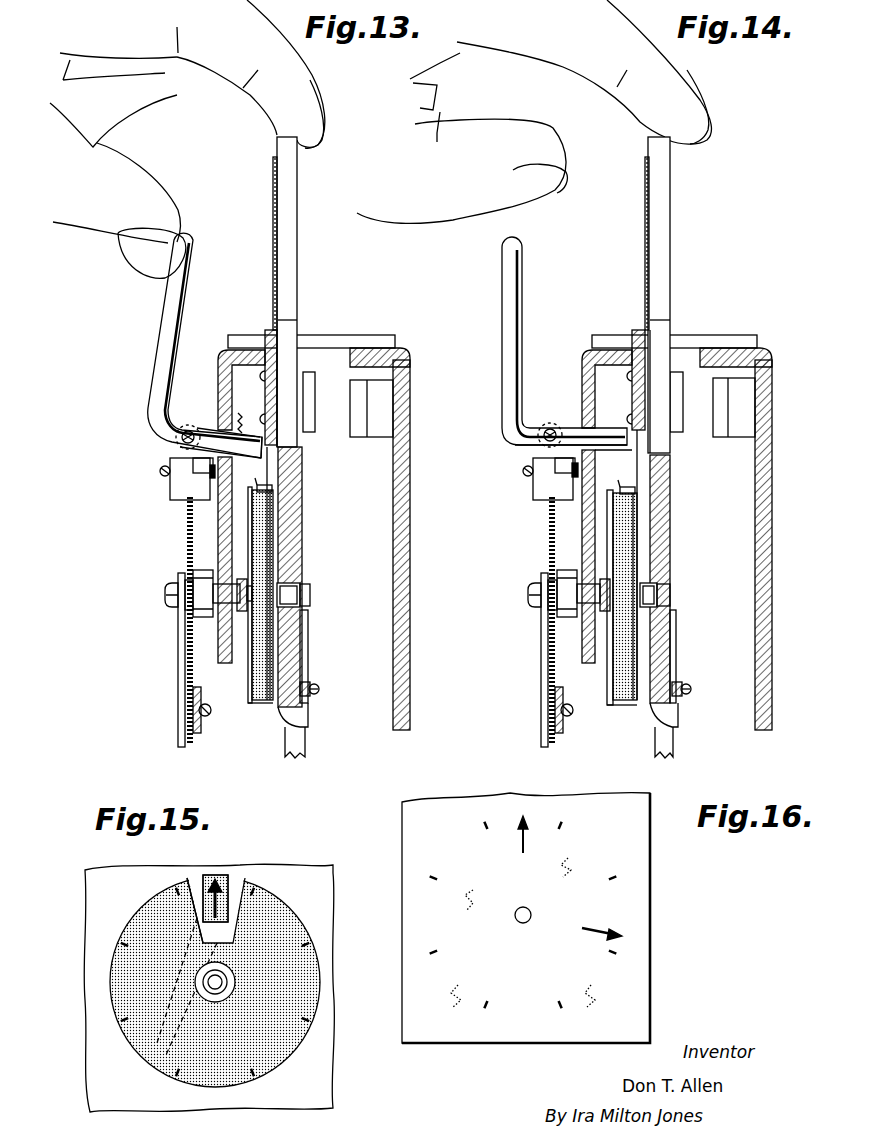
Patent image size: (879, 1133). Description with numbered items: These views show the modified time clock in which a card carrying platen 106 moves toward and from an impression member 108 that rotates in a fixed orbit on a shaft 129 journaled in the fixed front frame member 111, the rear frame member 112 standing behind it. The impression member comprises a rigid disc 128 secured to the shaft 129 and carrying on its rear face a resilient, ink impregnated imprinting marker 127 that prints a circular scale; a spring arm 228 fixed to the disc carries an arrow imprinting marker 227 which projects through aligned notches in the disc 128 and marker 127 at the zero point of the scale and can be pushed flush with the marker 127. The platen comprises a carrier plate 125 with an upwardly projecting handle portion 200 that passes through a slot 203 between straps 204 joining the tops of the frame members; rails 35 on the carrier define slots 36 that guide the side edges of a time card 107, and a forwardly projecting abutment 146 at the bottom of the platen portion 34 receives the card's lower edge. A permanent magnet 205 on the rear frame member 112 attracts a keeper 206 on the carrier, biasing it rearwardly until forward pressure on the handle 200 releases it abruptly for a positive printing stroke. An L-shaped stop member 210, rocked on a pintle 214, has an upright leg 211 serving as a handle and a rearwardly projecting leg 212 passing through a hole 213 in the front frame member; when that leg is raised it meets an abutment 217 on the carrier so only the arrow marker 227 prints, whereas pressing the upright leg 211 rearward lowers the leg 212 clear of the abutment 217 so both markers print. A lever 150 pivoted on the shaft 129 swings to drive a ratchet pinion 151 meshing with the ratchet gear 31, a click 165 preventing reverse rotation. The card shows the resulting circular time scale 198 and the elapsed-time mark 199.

In FIG. 13, the handle portion 200 is at (287, 175).
In FIG. 14, the handle portion 200 is at (658, 200).
In FIG. 13, the time card 107 is at (274, 210).
In FIG. 14, the time card 107 is at (646, 232).
In FIG. 16, the time card 107 is at (630, 848).
In FIG. 13, the card carrying platen 106 is at (268, 325).
In FIG. 14, the card carrying platen 106 is at (635, 322).
In FIG. 13, the straps 204 is at (312, 335).
In FIG. 14, the straps 204 is at (683, 335).
In FIG. 13, the slot 203 is at (337, 355).
In FIG. 14, the slot 203 is at (703, 352).
In FIG. 13, the keeper 206 is at (315, 382).
In FIG. 14, the keeper 206 is at (684, 417).
In FIG. 13, the permanent magnet 205 is at (352, 437).
In FIG. 14, the permanent magnet 205 is at (714, 437).
In FIG. 13, the stop member 210 is at (165, 318).
In FIG. 14, the stop member 210 is at (502, 310).
In FIG. 13, the upright leg 211 is at (156, 357).
In FIG. 14, the upright leg 211 is at (502, 347).
In FIG. 13, the front frame member 111 is at (218, 380).
In FIG. 14, the front frame member 111 is at (582, 382).
In FIG. 13, the rear frame member 112 is at (410, 512).
In FIG. 14, the rear frame member 112 is at (772, 495).
In FIG. 13, the rails 35 is at (260, 392).
In FIG. 14, the rails 35 is at (630, 393).
In FIG. 13, the slots 36 is at (280, 398).
In FIG. 14, the slots 36 is at (648, 398).
In FIG. 13, the rearwardly projecting leg 212 is at (216, 431).
In FIG. 13, the hole 213 is at (238, 431).
In FIG. 14, the hole 213 is at (596, 452).
In FIG. 13, the pintle 214 is at (180, 441).
In FIG. 14, the pintle 214 is at (540, 441).
In FIG. 13, the abutment 217 is at (270, 448).
In FIG. 14, the abutment 217 is at (568, 418).
In FIG. 13, the arrow imprinting marker 227 is at (268, 483).
In FIG. 14, the arrow imprinting marker 227 is at (626, 487).
In FIG. 15, the arrow imprinting marker 227 is at (228, 878).
In FIG. 13, the click 165 is at (172, 490).
In FIG. 14, the click 165 is at (534, 490).
In FIG. 13, the spring arm 228 is at (247, 538).
In FIG. 14, the spring arm 228 is at (605, 537).
In FIG. 15, the spring arm 228 is at (189, 880).
In FIG. 13, the carrier plate 125 is at (303, 533).
In FIG. 14, the carrier plate 125 is at (672, 530).
In FIG. 13, the shaft 129 is at (300, 592).
In FIG. 14, the shaft 129 is at (658, 592).
In FIG. 15, the shaft 129 is at (222, 995).
In FIG. 13, the ratchet gear 31 is at (187, 637).
In FIG. 14, the ratchet gear 31 is at (548, 637).
In FIG. 13, the imprinting marker 127 is at (280, 642).
In FIG. 14, the imprinting marker 127 is at (640, 642).
In FIG. 15, the imprinting marker 127 is at (303, 962).
In FIG. 13, the platen portion 34 is at (293, 652).
In FIG. 13, the lever 150 is at (178, 667).
In FIG. 14, the lever 150 is at (541, 667).
In FIG. 13, the disc 128 is at (250, 690).
In FIG. 14, the disc 128 is at (611, 688).
In FIG. 13, the ratchet pinion 151 is at (192, 722).
In FIG. 14, the ratchet pinion 151 is at (554, 715).
In FIG. 13, the impression member 108 is at (257, 712).
In FIG. 14, the impression member 108 is at (626, 710).
In FIG. 15, the impression member 108 is at (290, 886).
In FIG. 13, the abutment 146 is at (274, 722).
In FIG. 14, the abutment 146 is at (644, 727).
In FIG. 16, the circular time scale 198 is at (560, 827).
In FIG. 16, the mark 199 is at (620, 934).